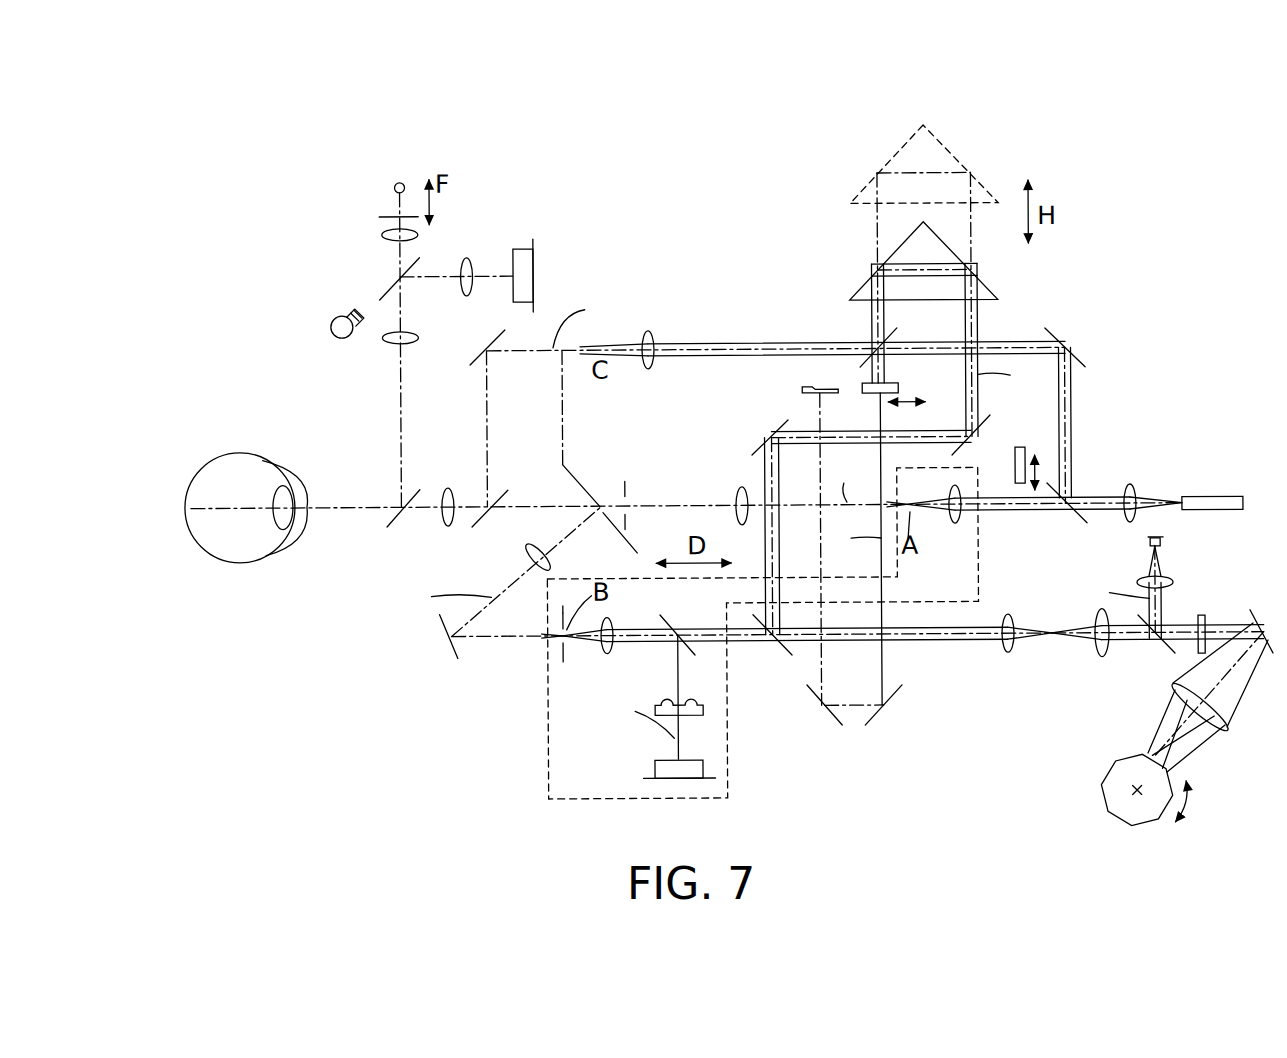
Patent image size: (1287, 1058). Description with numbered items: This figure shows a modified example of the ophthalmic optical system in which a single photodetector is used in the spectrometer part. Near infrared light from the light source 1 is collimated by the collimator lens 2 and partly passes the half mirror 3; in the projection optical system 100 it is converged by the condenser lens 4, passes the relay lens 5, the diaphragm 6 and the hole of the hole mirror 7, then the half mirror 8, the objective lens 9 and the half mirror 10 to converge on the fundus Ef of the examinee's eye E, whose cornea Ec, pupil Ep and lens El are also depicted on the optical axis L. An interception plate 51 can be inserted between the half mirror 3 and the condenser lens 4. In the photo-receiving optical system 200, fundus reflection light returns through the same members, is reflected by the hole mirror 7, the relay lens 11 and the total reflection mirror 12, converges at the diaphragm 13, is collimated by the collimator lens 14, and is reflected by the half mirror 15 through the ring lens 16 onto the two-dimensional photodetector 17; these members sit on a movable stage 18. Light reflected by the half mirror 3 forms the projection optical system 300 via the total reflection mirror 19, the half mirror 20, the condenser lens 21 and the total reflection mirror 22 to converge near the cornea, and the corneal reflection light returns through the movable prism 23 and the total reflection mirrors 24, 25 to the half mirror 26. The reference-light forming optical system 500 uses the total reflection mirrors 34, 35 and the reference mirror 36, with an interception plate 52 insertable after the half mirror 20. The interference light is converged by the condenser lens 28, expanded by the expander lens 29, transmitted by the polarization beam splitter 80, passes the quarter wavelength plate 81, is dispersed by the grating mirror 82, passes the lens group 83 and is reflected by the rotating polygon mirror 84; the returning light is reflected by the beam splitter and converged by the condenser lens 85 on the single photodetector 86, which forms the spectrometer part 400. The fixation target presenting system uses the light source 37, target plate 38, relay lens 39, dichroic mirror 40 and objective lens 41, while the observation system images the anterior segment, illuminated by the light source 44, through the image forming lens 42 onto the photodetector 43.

The light source 1 is at (1207, 498).
The collimator lens 2 is at (1131, 486).
The half mirror 3 is at (1060, 492).
The condenser lens 4 is at (955, 525).
The relay lens 5 is at (738, 486).
The diaphragm 6 is at (626, 484).
The hole mirror 7 is at (567, 470).
The half mirror 8 is at (485, 518).
The objective lens 9 is at (447, 524).
The half mirror 10 is at (390, 519).
The relay lens 11 is at (550, 557).
The total reflection mirror 12 is at (448, 656).
The diaphragm 13 is at (565, 656).
The collimator lens 14 is at (610, 652).
The half mirror 15 is at (662, 617).
The ring lens 16 is at (690, 698).
The two-dimensional photodetector 17 is at (656, 762).
The stage 18 is at (725, 752).
The total reflection mirror 19 is at (1054, 338).
The half mirror 20 is at (861, 360).
The condenser lens 21 is at (648, 368).
The total reflection mirror 22 is at (477, 358).
The prism 23 is at (996, 290).
The total reflection mirror 24 is at (962, 450).
The total reflection mirror 25 is at (777, 428).
The half mirror 26 is at (782, 658).
The condenser lens 28 is at (1010, 656).
The expander lens 29 is at (1100, 660).
The total reflection mirror 34 is at (888, 710).
The total reflection mirror 35 is at (834, 718).
The reference mirror 36 is at (802, 388).
The light source 37 is at (396, 181).
The target plate 38 is at (384, 212).
The relay lens 39 is at (382, 232).
The dichroic mirror 40 is at (392, 286).
The objective lens 41 is at (383, 336).
The image forming lens 42 is at (466, 255).
The two-dimensional photodetector 43 is at (518, 246).
The light source 44 is at (343, 312).
The interception plate 51 is at (1019, 447).
The interception plate 52 is at (898, 387).
The polarization beam splitter 80 is at (1160, 655).
The quarter wavelength plate 81 is at (1202, 615).
The grating mirror 82 is at (1252, 612).
The lens group 83 is at (1218, 738).
The polygon mirror 84 is at (1108, 772).
The condenser lens 85 is at (1138, 580).
The single photodetector 86 is at (1163, 542).
The projection optical system 100 is at (1005, 543).
The photo-receiving optical system 200 is at (522, 713).
The projection optical system 300 is at (723, 303).
The scanning unit 400 is at (1052, 722).
The reference-light forming optical system 500 is at (866, 773).
The examinee's eye E is at (236, 542).
The cornea Ec is at (302, 532).
The fundus Ef is at (190, 490).
The pupil Ep is at (300, 498).
The crystalline lens El is at (282, 482).
The optical axis L is at (782, 514).